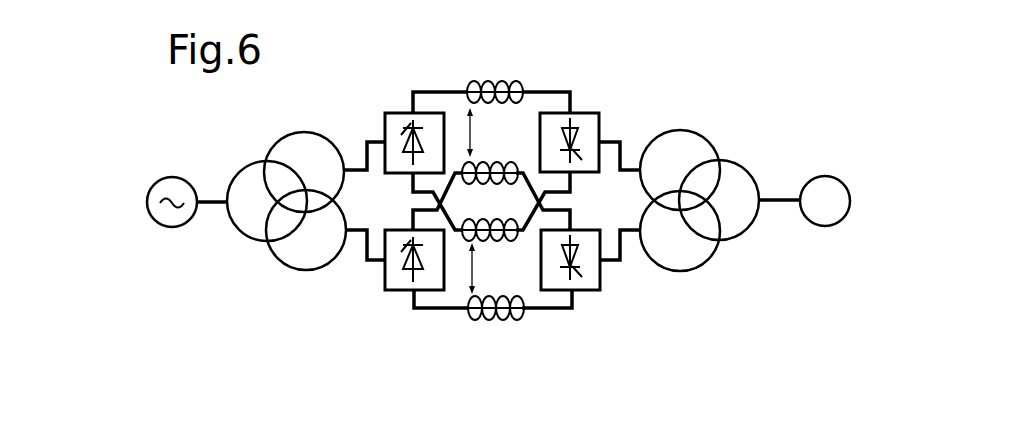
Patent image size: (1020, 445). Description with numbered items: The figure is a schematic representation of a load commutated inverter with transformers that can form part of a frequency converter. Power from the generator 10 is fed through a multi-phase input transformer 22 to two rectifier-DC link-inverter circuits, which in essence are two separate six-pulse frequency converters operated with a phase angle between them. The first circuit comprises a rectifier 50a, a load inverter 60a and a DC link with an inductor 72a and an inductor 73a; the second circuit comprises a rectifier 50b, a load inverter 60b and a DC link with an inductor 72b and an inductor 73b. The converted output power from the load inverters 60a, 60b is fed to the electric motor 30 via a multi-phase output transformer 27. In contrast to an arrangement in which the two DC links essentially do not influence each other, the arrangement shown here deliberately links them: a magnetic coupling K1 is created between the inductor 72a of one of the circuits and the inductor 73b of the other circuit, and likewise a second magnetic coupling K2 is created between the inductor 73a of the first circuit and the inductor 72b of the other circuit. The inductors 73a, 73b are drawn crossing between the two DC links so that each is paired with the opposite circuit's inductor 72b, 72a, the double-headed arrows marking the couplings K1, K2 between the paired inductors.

The generator 10 is at (178, 175).
The multi-phase input transformer 22 is at (260, 264).
The rectifier 50a is at (393, 120).
The rectifier 50b is at (380, 283).
The load inverter 60a is at (588, 120).
The load inverter 60b is at (585, 283).
The inductor 72a is at (495, 80).
The inductor 72b is at (487, 318).
The inductor 73a is at (502, 222).
The inductor 73b is at (488, 162).
The magnetic coupling K1 is at (465, 130).
The second magnetic coupling K2 is at (472, 275).
The multi-phase output transformer 27 is at (675, 291).
The electric motor 30 is at (820, 175).